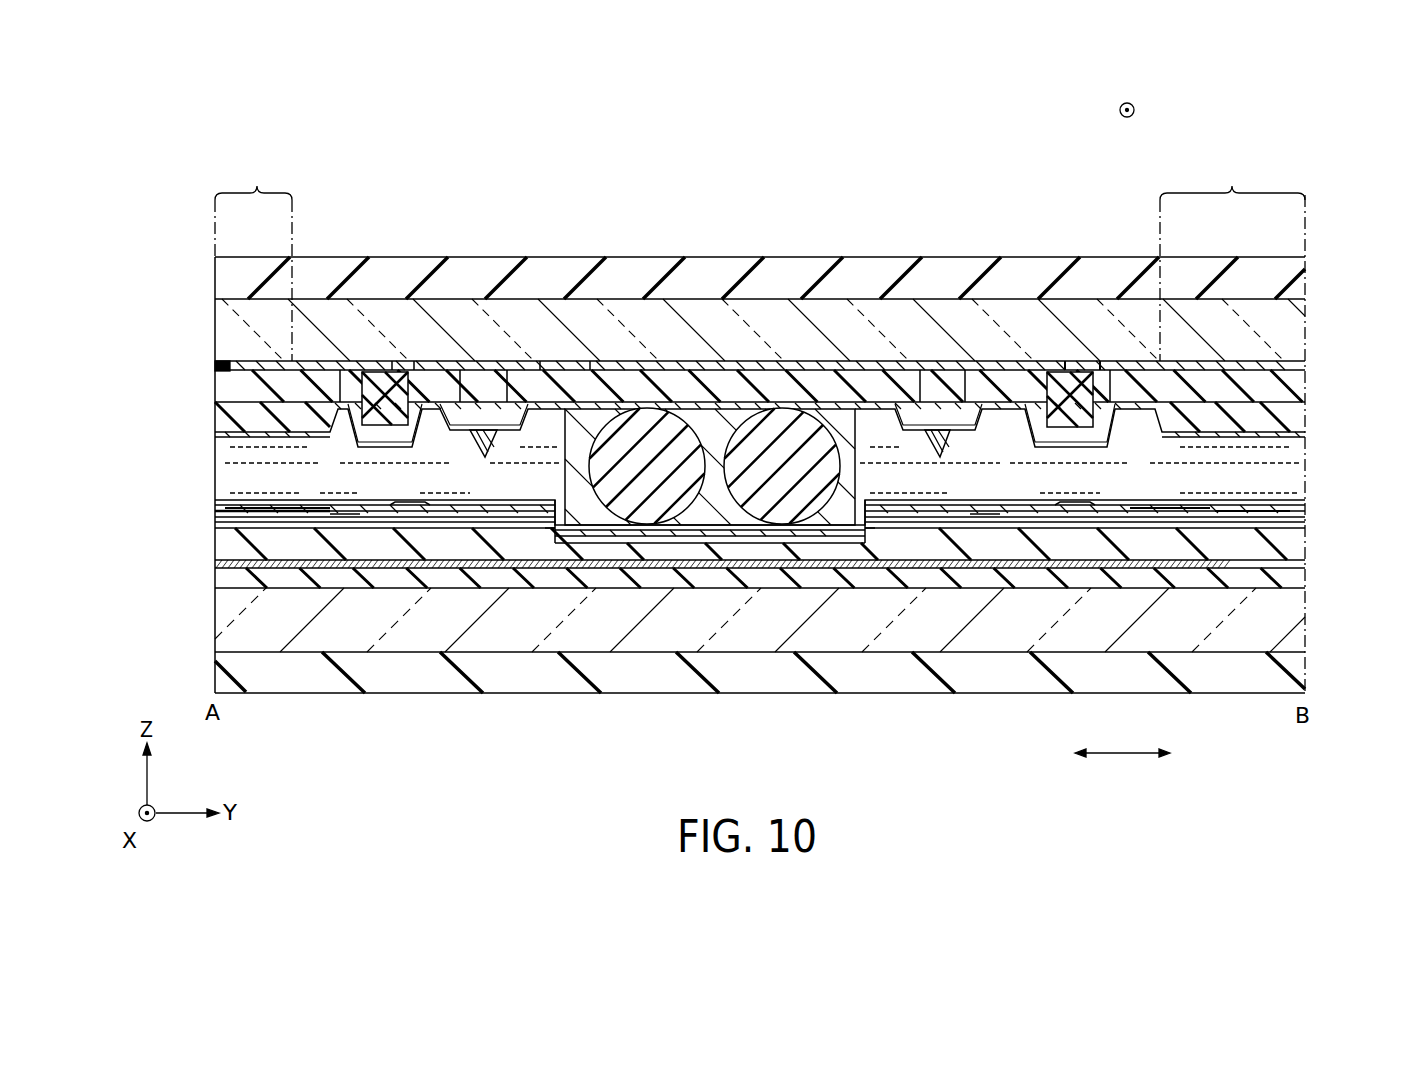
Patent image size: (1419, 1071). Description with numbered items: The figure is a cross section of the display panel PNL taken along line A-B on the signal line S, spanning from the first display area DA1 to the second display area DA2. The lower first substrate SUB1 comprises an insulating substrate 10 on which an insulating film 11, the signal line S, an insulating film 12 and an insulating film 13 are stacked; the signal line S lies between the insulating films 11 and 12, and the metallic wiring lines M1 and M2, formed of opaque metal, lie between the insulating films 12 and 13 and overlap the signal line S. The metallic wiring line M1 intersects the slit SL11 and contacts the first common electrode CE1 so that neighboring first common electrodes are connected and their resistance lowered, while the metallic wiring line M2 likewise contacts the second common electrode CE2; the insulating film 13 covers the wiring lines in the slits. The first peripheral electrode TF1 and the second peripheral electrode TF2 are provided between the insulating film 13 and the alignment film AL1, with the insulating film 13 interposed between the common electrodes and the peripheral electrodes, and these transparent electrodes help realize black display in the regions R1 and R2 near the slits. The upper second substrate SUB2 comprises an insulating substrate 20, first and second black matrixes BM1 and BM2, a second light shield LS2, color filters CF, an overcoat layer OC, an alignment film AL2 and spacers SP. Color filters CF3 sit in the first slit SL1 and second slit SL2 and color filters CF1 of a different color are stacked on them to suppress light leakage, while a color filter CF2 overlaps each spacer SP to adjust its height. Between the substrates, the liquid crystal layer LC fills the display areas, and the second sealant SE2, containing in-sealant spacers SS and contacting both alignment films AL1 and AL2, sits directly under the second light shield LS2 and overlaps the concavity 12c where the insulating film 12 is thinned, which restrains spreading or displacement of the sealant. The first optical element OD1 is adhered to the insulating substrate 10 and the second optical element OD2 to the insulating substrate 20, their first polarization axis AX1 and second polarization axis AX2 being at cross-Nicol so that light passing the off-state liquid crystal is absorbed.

The display panel PNL is at (208, 300).
The first display area DA1 is at (253, 259).
The second display area DA2 is at (1232, 259).
The second optical element OD2 is at (1292, 290).
The second substrate SUB2 is at (208, 329).
The insulating substrate 20 is at (1288, 323).
The first black matrix BM1 is at (222, 365).
The second black matrix BM2 is at (1285, 362).
The first slit SL1 is at (402, 361).
The second light shield LS2 is at (563, 362).
The color filters CF is at (240, 388).
The color filter CF1 is at (378, 384).
The color filter CF2 is at (485, 380).
The color filter CF3 is at (385, 378).
The overcoat layer OC is at (1292, 412).
The alignment film AL2 is at (1292, 434).
The spacer SP is at (484, 456).
The second sealant SE2 is at (725, 407).
The in-sealant spacers SS is at (650, 415).
The liquid crystal layer LC is at (227, 473).
The alignment film AL1 is at (1288, 505).
The insulating film 13 is at (1295, 512).
The metallic wiring line M1 is at (240, 523).
The metallic wiring line M2 is at (1290, 522).
The slit SL11 is at (213, 508).
The first common electrode CE1 is at (265, 510).
The first region R1 is at (358, 490).
The first peripheral electrode TF1 is at (400, 510).
The concavity 12c is at (842, 513).
The second region R2 is at (1000, 487).
The second peripheral electrode TF2 is at (1073, 512).
The second common electrode CE2 is at (1163, 520).
The second slit SL2 is at (1088, 362).
The insulating film 12 is at (1290, 545).
The signal line S is at (1290, 564).
The insulating film 11 is at (1290, 578).
The first substrate SUB1 is at (208, 611).
The insulating substrate 10 is at (1290, 620).
The first optical element OD1 is at (1290, 672).
The first polarization axis AX1 is at (1122, 741).
The second polarization axis AX2 is at (1127, 94).